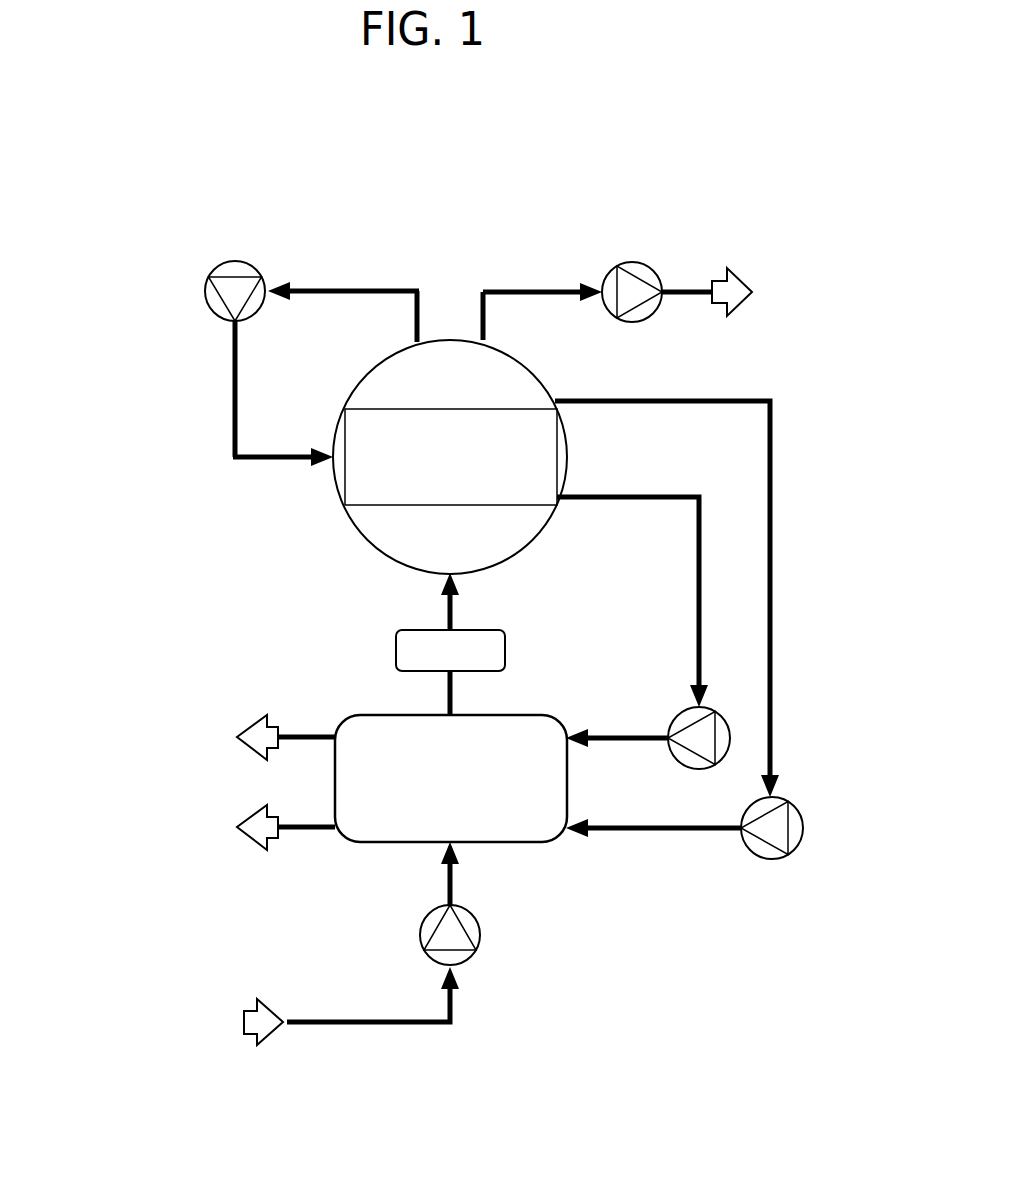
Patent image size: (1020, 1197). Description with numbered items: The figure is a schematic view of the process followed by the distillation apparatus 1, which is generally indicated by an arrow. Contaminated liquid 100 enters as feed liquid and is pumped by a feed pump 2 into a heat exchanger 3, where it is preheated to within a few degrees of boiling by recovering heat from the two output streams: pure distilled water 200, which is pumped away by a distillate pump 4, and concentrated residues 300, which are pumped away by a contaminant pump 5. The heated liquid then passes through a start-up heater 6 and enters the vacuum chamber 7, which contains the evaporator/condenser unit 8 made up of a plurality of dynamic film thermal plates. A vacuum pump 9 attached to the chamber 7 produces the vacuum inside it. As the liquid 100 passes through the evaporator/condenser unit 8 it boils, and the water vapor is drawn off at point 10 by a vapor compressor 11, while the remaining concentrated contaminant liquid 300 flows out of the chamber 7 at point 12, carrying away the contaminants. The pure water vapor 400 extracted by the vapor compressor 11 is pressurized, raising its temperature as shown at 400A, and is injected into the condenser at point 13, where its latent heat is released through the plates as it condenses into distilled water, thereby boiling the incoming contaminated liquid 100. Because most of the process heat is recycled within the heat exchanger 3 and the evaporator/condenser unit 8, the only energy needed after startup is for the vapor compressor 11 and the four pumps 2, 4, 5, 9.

The distillation apparatus 1 is at (560, 197).
The feed pump 2 is at (473, 954).
The heat exchanger 3 is at (513, 843).
The distillate pump 4 is at (677, 716).
The contaminant pump 5 is at (778, 858).
The start-up heater 6 is at (505, 643).
The vacuum chamber 7 is at (567, 450).
The evaporator/condenser unit 8 is at (373, 497).
The vacuum pump 9 is at (645, 265).
The vapor draw-off point 10 is at (450, 316).
The vapor compressor 11 is at (222, 262).
The concentrate outlet point 12 is at (665, 583).
The condenser injection point 13 is at (283, 444).
The pure water vapor 400 is at (389, 289).
The pressurized water vapor 400A is at (232, 412).
The contaminated liquid 100 is at (266, 1015).
The pure distilled water 200 is at (212, 746).
The concentrated residues 300 is at (188, 836).